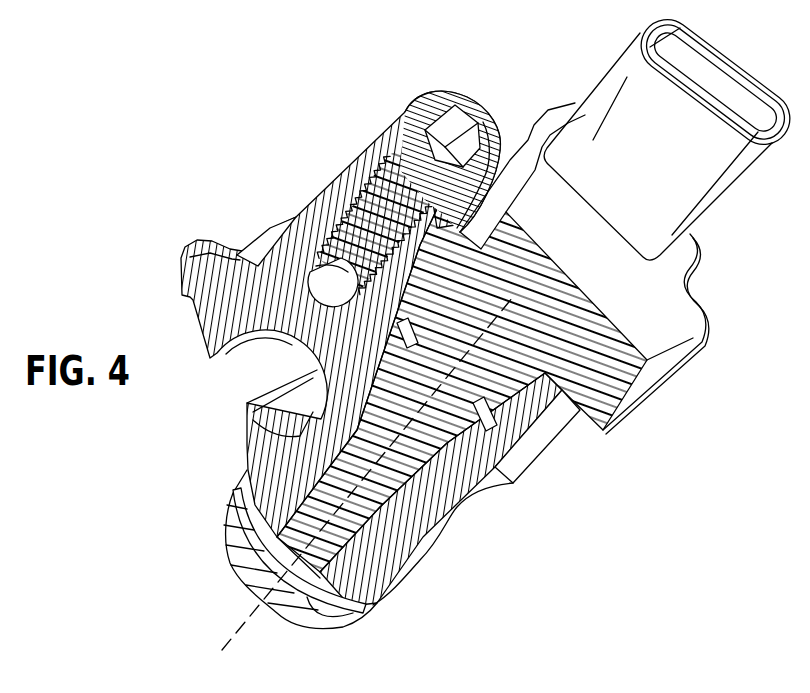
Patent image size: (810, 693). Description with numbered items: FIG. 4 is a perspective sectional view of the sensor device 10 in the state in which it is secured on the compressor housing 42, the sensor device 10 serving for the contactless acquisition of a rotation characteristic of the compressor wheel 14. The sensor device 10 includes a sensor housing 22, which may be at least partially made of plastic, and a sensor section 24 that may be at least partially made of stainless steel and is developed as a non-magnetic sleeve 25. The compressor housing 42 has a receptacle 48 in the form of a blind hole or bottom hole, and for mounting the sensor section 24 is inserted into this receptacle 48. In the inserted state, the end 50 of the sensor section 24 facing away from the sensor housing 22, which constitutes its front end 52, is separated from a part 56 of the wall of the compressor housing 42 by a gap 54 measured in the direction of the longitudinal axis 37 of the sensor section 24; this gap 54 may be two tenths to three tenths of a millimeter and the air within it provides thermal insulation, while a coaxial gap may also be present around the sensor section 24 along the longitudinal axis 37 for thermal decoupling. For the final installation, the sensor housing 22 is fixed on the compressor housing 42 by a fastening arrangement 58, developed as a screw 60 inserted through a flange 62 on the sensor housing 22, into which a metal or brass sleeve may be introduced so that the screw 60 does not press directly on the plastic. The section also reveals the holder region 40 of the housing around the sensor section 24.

The sensor device 10 is at (603, 377).
The compressor wheel 14 is at (291, 610).
The sensor housing 22 is at (690, 173).
The sensor section 24 is at (301, 324).
The non-magnetic sleeve 25 is at (320, 485).
The longitudinal axis 37 is at (237, 638).
The holder strip 40 is at (450, 489).
The compressor housing 42 is at (393, 527).
The receptacle 48 is at (288, 518).
The end of sensor section 50 is at (245, 550).
The front end 52 is at (275, 548).
The gap 54 is at (276, 583).
The part of the wall 56 is at (318, 606).
The fastening arrangement 58 is at (466, 129).
The screw 60 is at (473, 110).
The flange 62 is at (370, 157).